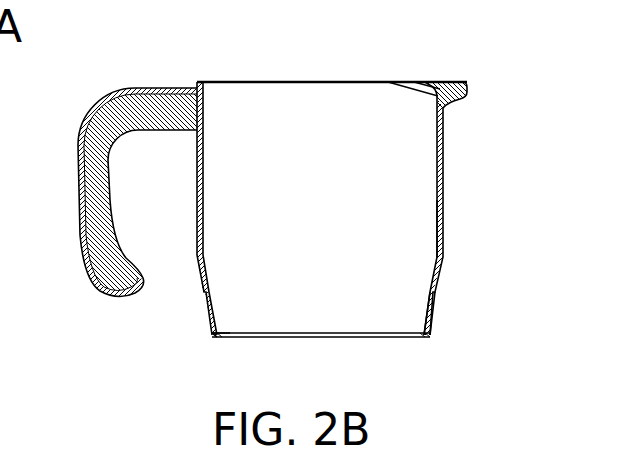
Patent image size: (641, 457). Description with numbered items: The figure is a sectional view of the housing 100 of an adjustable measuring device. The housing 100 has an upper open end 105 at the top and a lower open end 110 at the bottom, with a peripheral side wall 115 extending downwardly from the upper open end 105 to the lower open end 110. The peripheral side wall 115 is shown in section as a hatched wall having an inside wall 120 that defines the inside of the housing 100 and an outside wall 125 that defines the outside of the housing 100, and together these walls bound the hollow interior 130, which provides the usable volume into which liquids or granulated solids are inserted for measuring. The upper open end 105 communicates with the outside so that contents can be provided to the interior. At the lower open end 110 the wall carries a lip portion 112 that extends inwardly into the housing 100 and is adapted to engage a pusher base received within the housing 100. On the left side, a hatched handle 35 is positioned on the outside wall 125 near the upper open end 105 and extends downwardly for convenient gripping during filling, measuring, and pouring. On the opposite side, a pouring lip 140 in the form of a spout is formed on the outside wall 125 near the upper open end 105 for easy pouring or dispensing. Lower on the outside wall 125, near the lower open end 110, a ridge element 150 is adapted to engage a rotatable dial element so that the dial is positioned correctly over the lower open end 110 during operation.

The housing 100 is at (282, 194).
The upper open end 105 is at (337, 81).
The lower open end 110 is at (350, 338).
The lip portion 112 is at (218, 334).
The peripheral side wall 115 is at (198, 258).
The inside wall 120 is at (435, 160).
The outside wall 125 is at (445, 227).
The hollow interior 130 is at (303, 97).
The pouring lip 140 is at (456, 81).
The ridge element 150 is at (435, 295).
The handle 35 is at (78, 145).